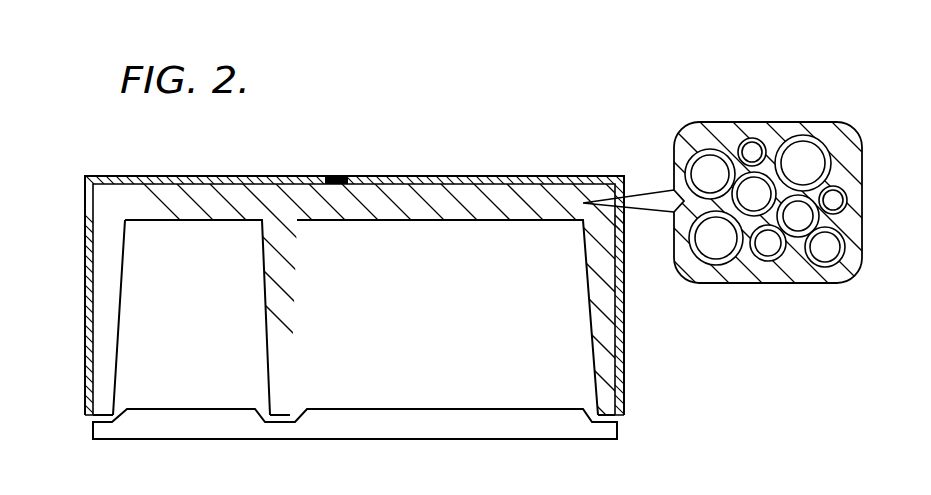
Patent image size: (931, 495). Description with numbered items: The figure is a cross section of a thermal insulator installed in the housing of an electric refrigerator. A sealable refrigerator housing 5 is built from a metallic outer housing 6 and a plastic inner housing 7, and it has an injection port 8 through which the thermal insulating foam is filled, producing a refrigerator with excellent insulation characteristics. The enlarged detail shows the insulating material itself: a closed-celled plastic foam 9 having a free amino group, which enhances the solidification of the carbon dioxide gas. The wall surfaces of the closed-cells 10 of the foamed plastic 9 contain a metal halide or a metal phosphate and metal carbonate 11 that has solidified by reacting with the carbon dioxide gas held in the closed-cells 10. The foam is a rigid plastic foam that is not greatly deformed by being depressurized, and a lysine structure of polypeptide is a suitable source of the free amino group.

The refrigerator housing 5 is at (465, 240).
The metallic outer housing 6 is at (430, 177).
The plastic inner housing 7 is at (355, 221).
The injection port 8 is at (337, 176).
The closed-celled plastic foam 9 is at (655, 247).
The closed-cells 10 is at (712, 170).
The metal carbonate 11 is at (703, 152).